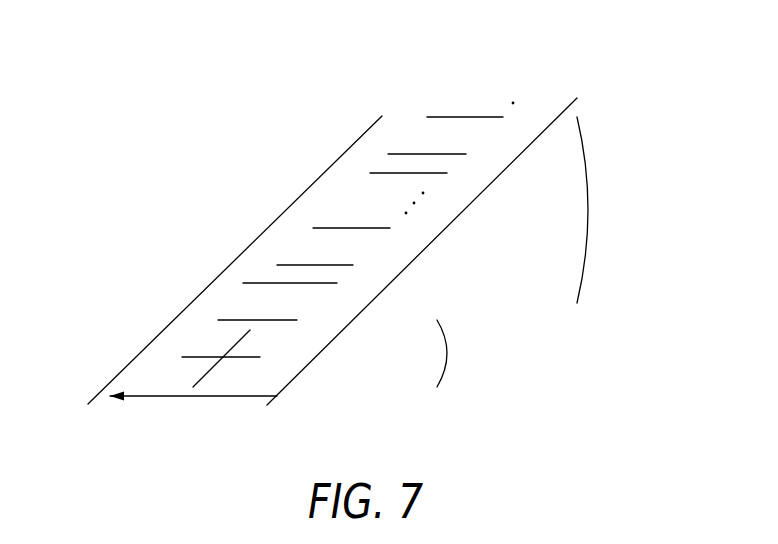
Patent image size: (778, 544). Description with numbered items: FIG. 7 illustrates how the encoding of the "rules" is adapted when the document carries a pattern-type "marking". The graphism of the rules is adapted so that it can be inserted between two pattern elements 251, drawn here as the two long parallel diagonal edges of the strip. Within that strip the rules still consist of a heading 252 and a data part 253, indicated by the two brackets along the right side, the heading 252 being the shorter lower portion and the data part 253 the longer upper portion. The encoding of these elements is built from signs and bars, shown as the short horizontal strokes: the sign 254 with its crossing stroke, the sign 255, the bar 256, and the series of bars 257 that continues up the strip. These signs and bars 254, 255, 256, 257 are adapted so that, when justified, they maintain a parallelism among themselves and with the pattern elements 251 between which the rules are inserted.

The pattern elements 251 is at (302, 373).
The heading 252 is at (466, 353).
The data part 253 is at (607, 210).
The sign 254 is at (182, 357).
The sign 255 is at (220, 318).
The bar 256 is at (257, 282).
The bars 257 is at (337, 198).